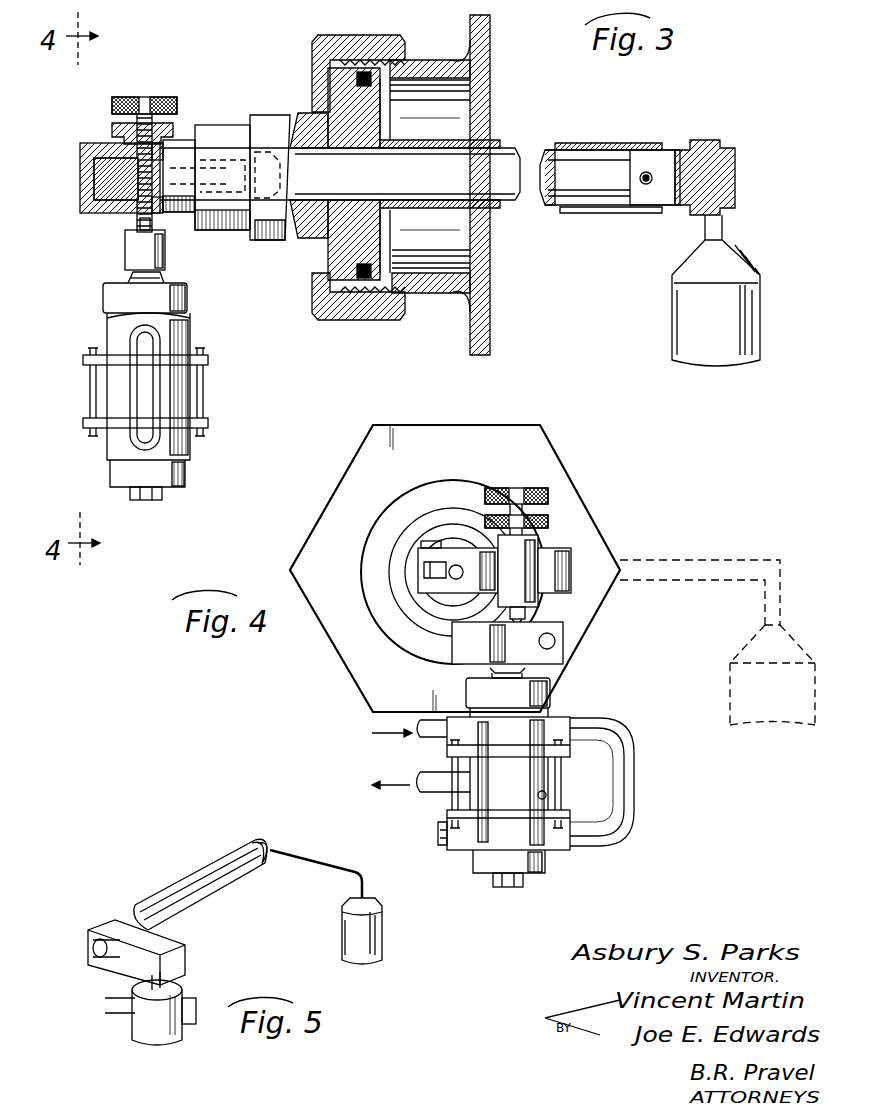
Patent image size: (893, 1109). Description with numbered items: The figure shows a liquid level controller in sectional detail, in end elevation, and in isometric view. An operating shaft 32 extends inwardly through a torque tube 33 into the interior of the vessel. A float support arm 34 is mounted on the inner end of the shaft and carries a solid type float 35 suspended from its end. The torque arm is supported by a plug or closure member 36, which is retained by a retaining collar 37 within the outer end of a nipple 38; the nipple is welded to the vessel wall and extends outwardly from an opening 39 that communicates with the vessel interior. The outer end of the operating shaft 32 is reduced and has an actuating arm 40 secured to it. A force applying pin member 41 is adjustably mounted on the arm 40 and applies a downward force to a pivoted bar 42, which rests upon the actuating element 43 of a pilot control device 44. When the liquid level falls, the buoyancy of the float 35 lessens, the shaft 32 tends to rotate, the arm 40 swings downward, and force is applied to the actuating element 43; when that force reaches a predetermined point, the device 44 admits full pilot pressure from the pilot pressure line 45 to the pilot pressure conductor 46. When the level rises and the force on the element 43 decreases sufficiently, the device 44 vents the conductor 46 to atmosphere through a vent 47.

In FIG. 3, the operating shaft 32 is at (520, 200).
In FIG. 4, the operating shaft 32 is at (453, 568).
In FIG. 5, the operating shaft 32 is at (250, 848).
In FIG. 3, the torque tube 33 is at (580, 144).
In FIG. 5, the torque tube 33 is at (226, 887).
In FIG. 3, the float support arm 34 is at (720, 145).
In FIG. 5, the float support arm 34 is at (302, 858).
In FIG. 3, the solid type float 35 is at (748, 306).
In FIG. 4, the solid type float 35 is at (730, 715).
In FIG. 5, the solid type float 35 is at (384, 925).
In FIG. 3, the plug or closure member 36 is at (325, 252).
In FIG. 3, the retaining collar 37 is at (358, 320).
In FIG. 4, the retaining collar 37 is at (543, 445).
In FIG. 3, the nipple 38 is at (440, 293).
In FIG. 3, the opening 39 is at (480, 272).
In FIG. 3, the actuating arm 40 is at (96, 162).
In FIG. 4, the actuating arm 40 is at (560, 548).
In FIG. 5, the actuating arm 40 is at (182, 955).
In FIG. 3, the force applying pin member 41 is at (138, 221).
In FIG. 4, the force applying pin member 41 is at (528, 611).
In FIG. 3, the pivoted bar 42 is at (126, 250).
In FIG. 4, the pivoted bar 42 is at (465, 648).
In FIG. 3, the actuating element 43 is at (130, 279).
In FIG. 4, the actuating element 43 is at (522, 670).
In FIG. 3, the pilot control device 44 is at (106, 333).
In FIG. 4, the pilot control device 44 is at (550, 722).
In FIG. 5, the pilot control device 44 is at (160, 1028).
In FIG. 4, the pilot pressure line 45 is at (420, 736).
In FIG. 4, the pilot pressure conductor 46 is at (420, 788).
In FIG. 4, the vent 47 is at (548, 795).